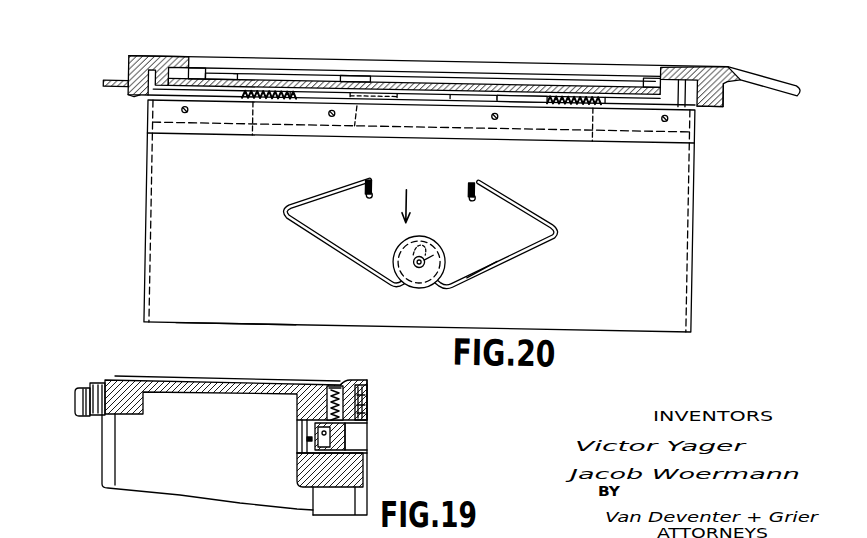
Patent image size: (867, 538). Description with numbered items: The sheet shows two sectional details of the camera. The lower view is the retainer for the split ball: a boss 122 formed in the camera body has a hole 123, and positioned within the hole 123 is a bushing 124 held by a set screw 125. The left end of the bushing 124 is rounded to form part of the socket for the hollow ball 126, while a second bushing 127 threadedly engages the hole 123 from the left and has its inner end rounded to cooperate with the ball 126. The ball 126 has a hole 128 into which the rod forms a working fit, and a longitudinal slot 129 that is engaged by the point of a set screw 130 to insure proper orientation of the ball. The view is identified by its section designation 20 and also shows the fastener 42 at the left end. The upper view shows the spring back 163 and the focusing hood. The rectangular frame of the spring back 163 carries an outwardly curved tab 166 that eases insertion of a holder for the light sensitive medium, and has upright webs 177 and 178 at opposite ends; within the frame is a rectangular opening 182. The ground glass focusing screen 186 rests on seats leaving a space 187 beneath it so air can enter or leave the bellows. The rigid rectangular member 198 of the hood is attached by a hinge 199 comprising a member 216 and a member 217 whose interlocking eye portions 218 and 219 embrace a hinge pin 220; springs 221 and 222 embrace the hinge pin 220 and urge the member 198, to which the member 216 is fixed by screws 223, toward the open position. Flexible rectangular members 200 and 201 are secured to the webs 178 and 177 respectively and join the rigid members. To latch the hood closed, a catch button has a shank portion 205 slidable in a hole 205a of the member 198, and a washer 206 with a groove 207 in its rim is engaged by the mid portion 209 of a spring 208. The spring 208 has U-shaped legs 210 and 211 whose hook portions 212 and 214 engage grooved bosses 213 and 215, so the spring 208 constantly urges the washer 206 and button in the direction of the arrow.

In FIG. 19, the plate / bracket 20 is at (187, 365).
In FIG. 19, the bolt 42 is at (76, 403).
In FIG. 19, the boss 122 is at (292, 468).
In FIG. 19, the hole 123 is at (370, 452).
In FIG. 19, the bushing 124 is at (367, 426).
In FIG. 19, the set screw 125 is at (370, 386).
In FIG. 19, the hollow ball 126 is at (328, 478).
In FIG. 19, the bushing 127 is at (296, 437).
In FIG. 19, the hole 128 is at (323, 423).
In FIG. 19, the longitudinal slot 129 is at (338, 420).
In FIG. 19, the set screw 130 is at (330, 392).
In FIG. 20, the spring back 163 is at (729, 87).
In FIG. 20, the tab 166 is at (771, 62).
In FIG. 20, the upright web 177 is at (710, 100).
In FIG. 20, the upright web 178 is at (145, 98).
In FIG. 20, the rectangular opening 182 is at (653, 69).
In FIG. 20, the ground glass focusing screen 186 is at (430, 83).
In FIG. 20, the space 187 is at (200, 71).
In FIG. 20, the rigid rectangular member 198 is at (238, 303).
In FIG. 20, the hinge 199 is at (632, 131).
In FIG. 20, the flexible rectangular member 200 is at (147, 242).
In FIG. 20, the flexible rectangular member 201 is at (695, 247).
In FIG. 20, the shank portion 205 is at (447, 244).
In FIG. 20, the hole 205a is at (402, 241).
In FIG. 20, the washer 206 is at (441, 278).
In FIG. 20, the groove 207 is at (398, 268).
In FIG. 20, the spring 208 is at (549, 250).
In FIG. 20, the mid portion 209 is at (428, 225).
In FIG. 20, the U-shaped leg 210 is at (558, 217).
In FIG. 20, the U-shaped leg 211 is at (282, 225).
In FIG. 20, the hook portion 212 is at (477, 190).
In FIG. 20, the grooved boss 213 is at (474, 174).
In FIG. 20, the hook portion 214 is at (369, 189).
In FIG. 20, the grooved boss 215 is at (371, 174).
In FIG. 20, the hinge member 216 is at (672, 125).
In FIG. 20, the hinge member 217 is at (697, 55).
In FIG. 20, the eye portion 218 is at (528, 91).
In FIG. 20, the eye portion 219 is at (470, 92).
In FIG. 20, the hinge pin 220 is at (332, 140).
In FIG. 20, the spring 221 is at (587, 94).
In FIG. 20, the spring 222 is at (268, 98).
In FIG. 20, the screws 223 is at (330, 115).